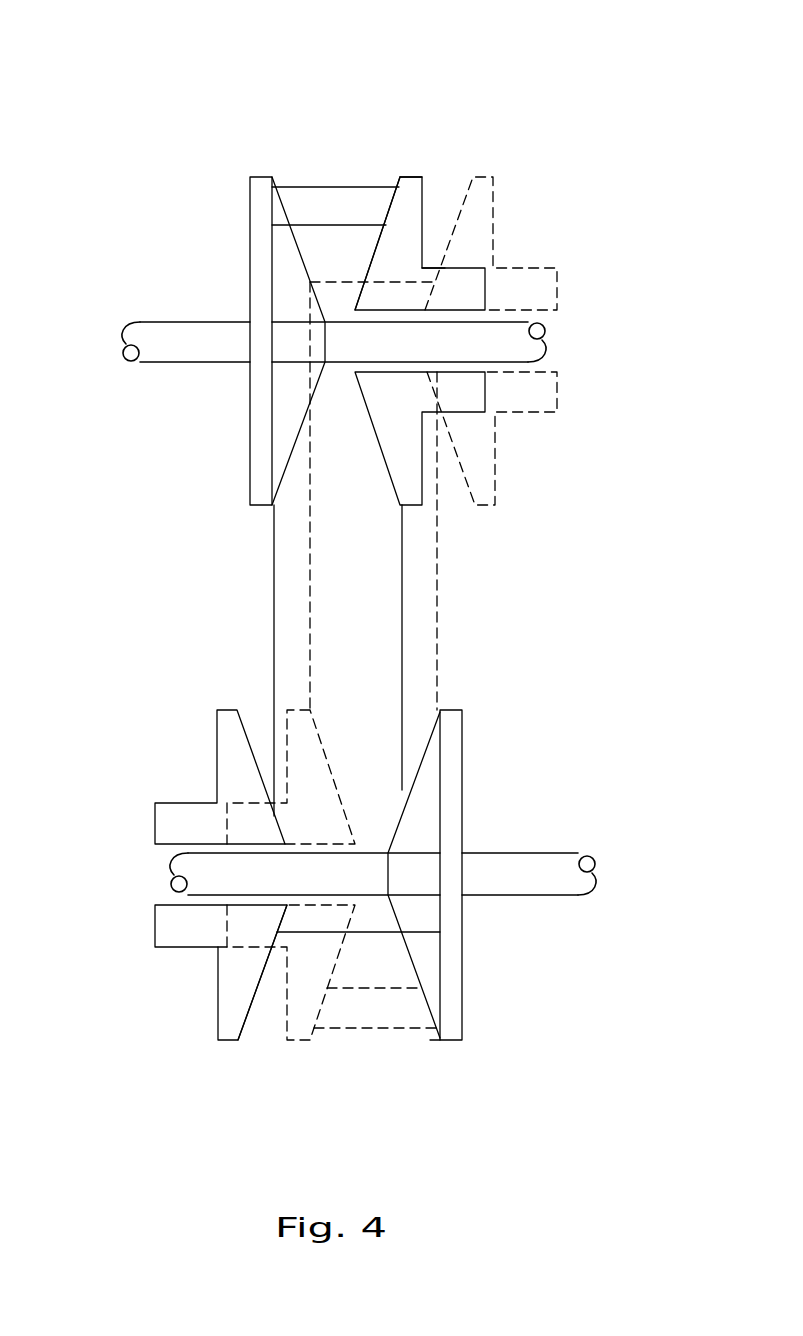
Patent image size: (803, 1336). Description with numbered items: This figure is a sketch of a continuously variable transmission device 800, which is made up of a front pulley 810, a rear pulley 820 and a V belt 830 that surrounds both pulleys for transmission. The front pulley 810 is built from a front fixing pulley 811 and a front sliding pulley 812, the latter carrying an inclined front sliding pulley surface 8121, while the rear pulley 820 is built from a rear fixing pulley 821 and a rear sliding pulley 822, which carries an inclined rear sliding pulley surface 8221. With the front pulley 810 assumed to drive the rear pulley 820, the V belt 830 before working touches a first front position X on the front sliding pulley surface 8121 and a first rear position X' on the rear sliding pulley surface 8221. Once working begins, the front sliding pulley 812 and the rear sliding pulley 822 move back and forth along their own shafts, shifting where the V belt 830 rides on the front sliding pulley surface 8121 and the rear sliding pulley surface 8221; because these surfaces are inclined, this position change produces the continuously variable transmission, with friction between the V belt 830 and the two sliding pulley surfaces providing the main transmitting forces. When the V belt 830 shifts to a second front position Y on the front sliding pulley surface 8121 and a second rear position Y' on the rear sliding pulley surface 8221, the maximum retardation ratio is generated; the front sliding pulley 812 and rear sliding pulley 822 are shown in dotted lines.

The continuously variable transmission device 800 is at (592, 168).
The front pulley 810 is at (202, 2).
The front fixing pulley 811 is at (257, 177).
The front sliding pulley 812 is at (413, 187).
The front sliding pulley surface 8121 is at (381, 238).
The V belt 830 is at (325, 563).
The rear pulley 820 is at (636, 1105).
The rear fixing pulley 821 is at (452, 1042).
The rear sliding pulley 822 is at (228, 1040).
The rear sliding pulley surface 8221 is at (262, 973).
The first front position X is at (385, 110).
The second front position Y is at (458, 170).
The first rear position X' is at (257, 1026).
The second rear position Y' is at (399, 1089).